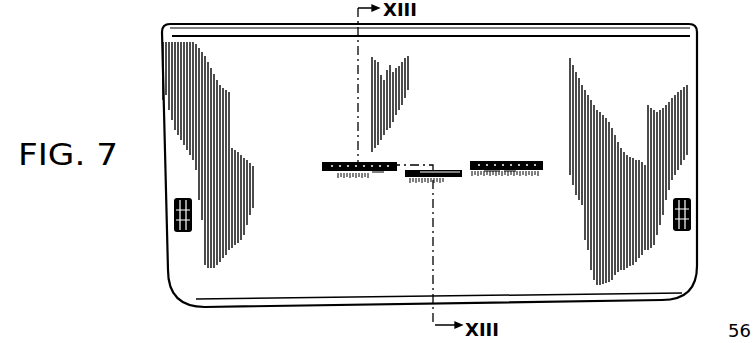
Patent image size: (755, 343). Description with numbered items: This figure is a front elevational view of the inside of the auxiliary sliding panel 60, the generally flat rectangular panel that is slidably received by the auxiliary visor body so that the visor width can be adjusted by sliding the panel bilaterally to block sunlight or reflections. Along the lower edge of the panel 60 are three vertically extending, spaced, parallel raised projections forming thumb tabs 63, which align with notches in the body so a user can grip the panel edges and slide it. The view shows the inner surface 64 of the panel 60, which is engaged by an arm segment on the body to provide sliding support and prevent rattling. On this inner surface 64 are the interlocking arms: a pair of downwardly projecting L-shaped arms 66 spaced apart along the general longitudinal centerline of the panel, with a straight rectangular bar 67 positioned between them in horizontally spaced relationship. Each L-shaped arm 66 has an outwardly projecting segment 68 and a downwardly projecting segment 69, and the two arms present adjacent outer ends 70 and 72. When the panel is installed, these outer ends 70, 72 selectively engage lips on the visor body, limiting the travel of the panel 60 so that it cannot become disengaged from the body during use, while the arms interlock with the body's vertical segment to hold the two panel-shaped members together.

The auxiliary sliding panel 60 is at (704, 161).
The thumb tabs (raised projections) 63 is at (203, 232).
The inner surface 64 is at (468, 121).
The L-shaped arms 66 is at (370, 172).
The rectangular bar 67 is at (447, 178).
The outwardly projecting segment 68 is at (507, 163).
The downwardly projecting segment 69 is at (490, 172).
The outer end 70 is at (322, 166).
The outer end 72 is at (543, 165).